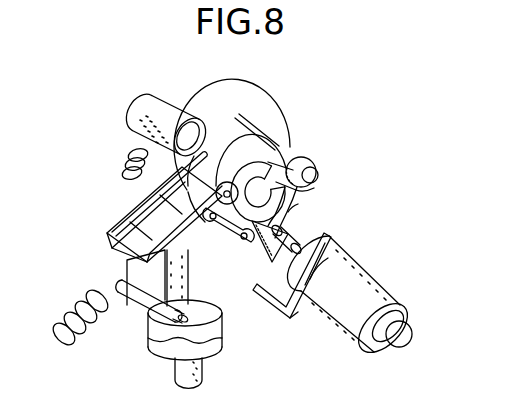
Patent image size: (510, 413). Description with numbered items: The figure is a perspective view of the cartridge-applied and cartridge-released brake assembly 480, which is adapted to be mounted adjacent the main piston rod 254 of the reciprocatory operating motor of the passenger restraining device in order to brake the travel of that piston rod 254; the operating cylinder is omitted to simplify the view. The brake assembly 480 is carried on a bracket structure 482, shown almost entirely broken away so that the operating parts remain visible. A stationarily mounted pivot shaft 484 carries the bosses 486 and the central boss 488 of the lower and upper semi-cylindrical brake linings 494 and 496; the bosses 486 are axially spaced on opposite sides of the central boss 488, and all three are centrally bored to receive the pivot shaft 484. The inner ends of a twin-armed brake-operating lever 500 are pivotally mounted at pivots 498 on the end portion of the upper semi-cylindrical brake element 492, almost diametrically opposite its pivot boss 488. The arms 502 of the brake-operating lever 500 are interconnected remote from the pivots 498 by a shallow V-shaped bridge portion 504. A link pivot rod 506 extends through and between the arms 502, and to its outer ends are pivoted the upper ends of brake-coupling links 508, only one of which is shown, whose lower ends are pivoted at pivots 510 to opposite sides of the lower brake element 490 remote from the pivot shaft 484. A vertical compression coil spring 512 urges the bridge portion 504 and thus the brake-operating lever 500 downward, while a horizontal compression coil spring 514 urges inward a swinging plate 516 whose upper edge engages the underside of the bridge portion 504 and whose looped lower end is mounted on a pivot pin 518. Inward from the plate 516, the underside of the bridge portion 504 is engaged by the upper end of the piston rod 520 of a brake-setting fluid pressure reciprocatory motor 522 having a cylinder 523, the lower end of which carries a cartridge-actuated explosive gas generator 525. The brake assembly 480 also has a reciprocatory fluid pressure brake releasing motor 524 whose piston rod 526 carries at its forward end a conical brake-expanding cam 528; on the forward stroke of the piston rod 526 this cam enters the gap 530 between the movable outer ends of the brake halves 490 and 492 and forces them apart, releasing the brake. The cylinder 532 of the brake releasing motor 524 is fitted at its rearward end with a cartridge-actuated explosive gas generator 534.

The main piston rod 254 is at (171, 108).
The brake assembly 480 is at (313, 155).
The bracket structure 482 is at (296, 310).
The pivot shaft 484 is at (318, 172).
The bosses 486 is at (281, 142).
The central boss 488 is at (290, 148).
The lower brake element 490 is at (288, 212).
The upper semi-cylindrical brake element 492 is at (223, 143).
The lower semi-cylindrical brake lining 494 is at (322, 188).
The upper semi-cylindrical brake lining 496 is at (252, 137).
The pivots 498 is at (206, 193).
The brake-operating lever 500 is at (110, 216).
The arms 502 is at (138, 222).
The bridge portion 504 is at (110, 234).
The link pivot rod 506 is at (209, 222).
The brake-coupling links 508 is at (195, 248).
The pivots 510 is at (253, 237).
The vertical compression coil spring 512 is at (123, 160).
The horizontal compression coil spring 514 is at (68, 301).
The swinging plate 516 is at (143, 278).
The pivot pin 518 is at (190, 306).
The piston rod 520 is at (265, 296).
The brake-setting fluid pressure reciprocatory motor 522 is at (228, 330).
The cylinder 523 is at (150, 334).
The brake releasing motor 524 is at (347, 252).
The cartridge-actuated explosive gas generator 525 is at (204, 372).
The piston rod 526 is at (306, 282).
The conical brake-expanding cam 528 is at (282, 237).
The gap 530 is at (238, 213).
The cylinder 532 is at (370, 286).
The cartridge-actuated explosive gas generator 534 is at (405, 323).